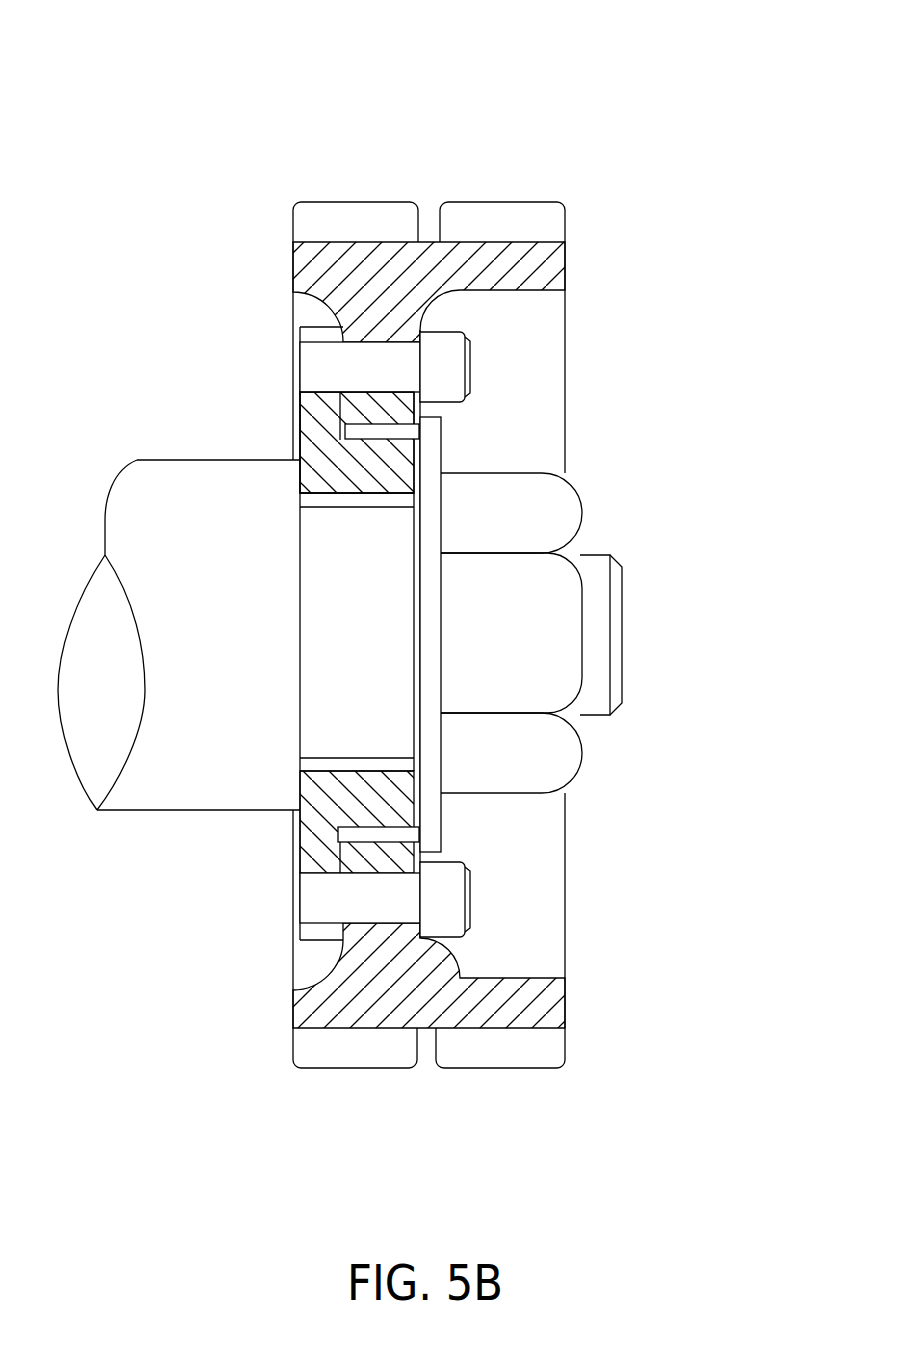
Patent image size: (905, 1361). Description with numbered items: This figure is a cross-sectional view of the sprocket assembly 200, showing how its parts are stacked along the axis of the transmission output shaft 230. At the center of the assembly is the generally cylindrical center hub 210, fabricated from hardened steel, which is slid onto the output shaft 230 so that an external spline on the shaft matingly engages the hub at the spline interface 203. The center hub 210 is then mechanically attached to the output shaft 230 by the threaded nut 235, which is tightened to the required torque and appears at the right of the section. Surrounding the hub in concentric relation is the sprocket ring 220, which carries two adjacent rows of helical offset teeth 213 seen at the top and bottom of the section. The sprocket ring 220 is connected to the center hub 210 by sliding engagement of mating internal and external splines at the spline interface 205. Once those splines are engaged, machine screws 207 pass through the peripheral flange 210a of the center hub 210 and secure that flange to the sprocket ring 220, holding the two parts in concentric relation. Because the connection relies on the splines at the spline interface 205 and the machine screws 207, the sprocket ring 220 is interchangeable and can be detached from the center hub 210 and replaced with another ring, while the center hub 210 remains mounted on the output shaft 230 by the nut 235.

The sprocket assembly 200 is at (432, 80).
The spline interface 203 is at (345, 762).
The spline interface 205 is at (410, 431).
The machine screws 207 is at (456, 366).
The center hub 210 is at (340, 482).
The peripheral flange 210a is at (322, 422).
The helical offset teeth 213 is at (365, 1068).
The sprocket ring 220 is at (565, 268).
The transmission output shaft 230 is at (268, 658).
The threaded nut 235 is at (548, 658).